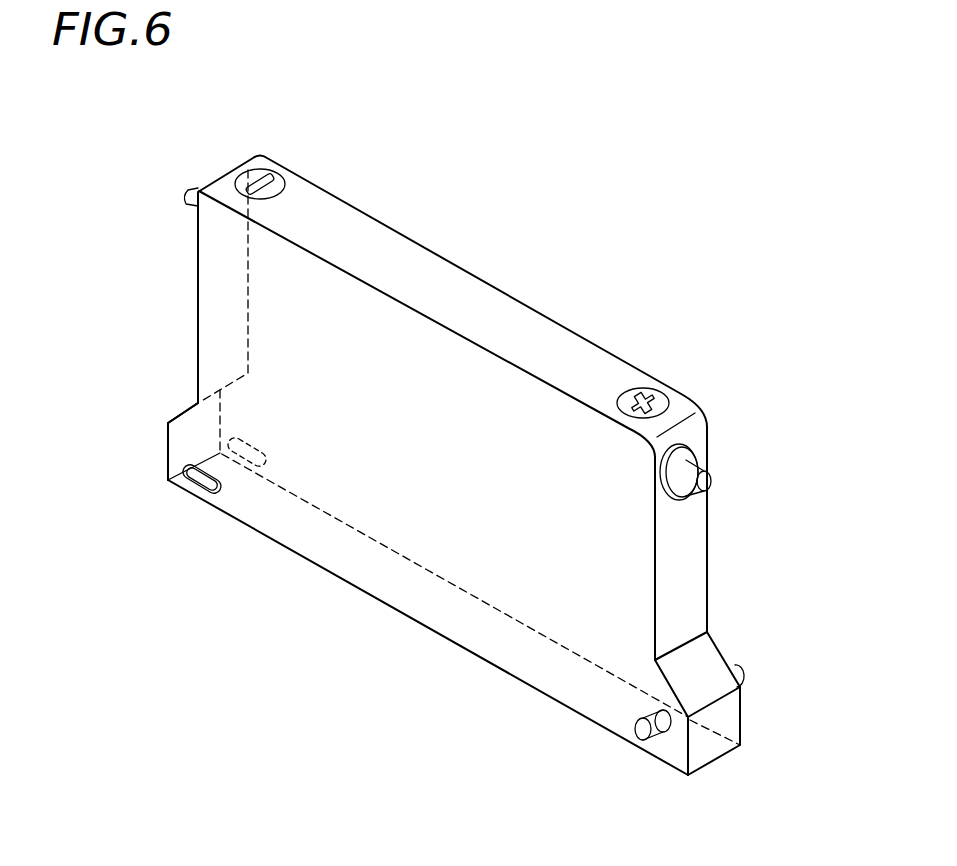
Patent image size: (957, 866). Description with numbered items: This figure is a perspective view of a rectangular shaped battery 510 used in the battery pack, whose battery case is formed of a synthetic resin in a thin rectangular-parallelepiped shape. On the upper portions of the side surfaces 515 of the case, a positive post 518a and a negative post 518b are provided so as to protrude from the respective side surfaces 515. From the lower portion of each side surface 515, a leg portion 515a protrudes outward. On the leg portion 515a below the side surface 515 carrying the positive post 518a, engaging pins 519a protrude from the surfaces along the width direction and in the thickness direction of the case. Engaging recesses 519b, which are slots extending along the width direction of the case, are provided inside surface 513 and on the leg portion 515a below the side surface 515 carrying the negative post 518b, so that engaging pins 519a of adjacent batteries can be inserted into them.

The rectangular shaped battery 510 is at (519, 278).
The inside surface 513 is at (363, 297).
The side surface 515 is at (692, 545).
The leg portion 515a is at (703, 745).
The positive post 518a is at (711, 478).
The negative post 518b is at (186, 197).
The engaging pin 519a is at (635, 733).
The engaging recess 519b is at (200, 495).